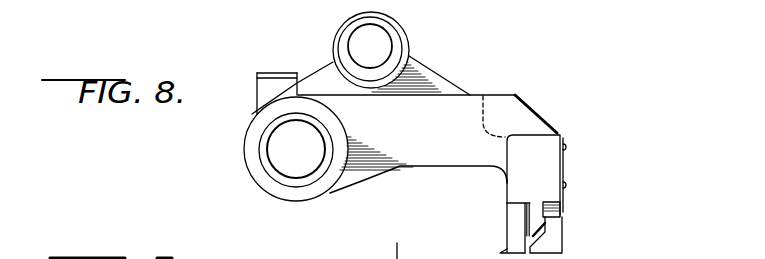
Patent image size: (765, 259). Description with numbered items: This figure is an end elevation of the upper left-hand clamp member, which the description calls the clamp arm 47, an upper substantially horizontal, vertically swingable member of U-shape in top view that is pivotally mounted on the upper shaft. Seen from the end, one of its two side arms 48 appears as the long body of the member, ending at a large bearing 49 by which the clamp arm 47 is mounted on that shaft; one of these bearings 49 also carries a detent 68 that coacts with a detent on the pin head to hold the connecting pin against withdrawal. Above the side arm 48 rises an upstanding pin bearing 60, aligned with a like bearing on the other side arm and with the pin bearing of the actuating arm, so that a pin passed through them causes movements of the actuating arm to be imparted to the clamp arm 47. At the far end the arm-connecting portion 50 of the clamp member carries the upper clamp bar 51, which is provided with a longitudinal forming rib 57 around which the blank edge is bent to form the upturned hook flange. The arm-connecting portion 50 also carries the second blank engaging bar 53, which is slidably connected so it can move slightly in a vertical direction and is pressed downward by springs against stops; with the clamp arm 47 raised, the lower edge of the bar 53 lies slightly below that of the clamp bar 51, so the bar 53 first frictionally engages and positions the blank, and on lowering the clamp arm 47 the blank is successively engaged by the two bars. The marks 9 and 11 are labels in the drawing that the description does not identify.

The arm 9 is at (452, 72).
The pin bearing 60 is at (333, 30).
The detent 68 is at (273, 75).
The bearing 49 is at (262, 172).
The side arm 48 is at (438, 154).
The arm-connecting portion 50 is at (498, 100).
The clamp arm 47 is at (548, 109).
The upper clamp bar 51 is at (505, 218).
The forming rib 57 is at (509, 252).
The second blank engaging bar 53 is at (552, 243).
The member 11 is at (393, 242).